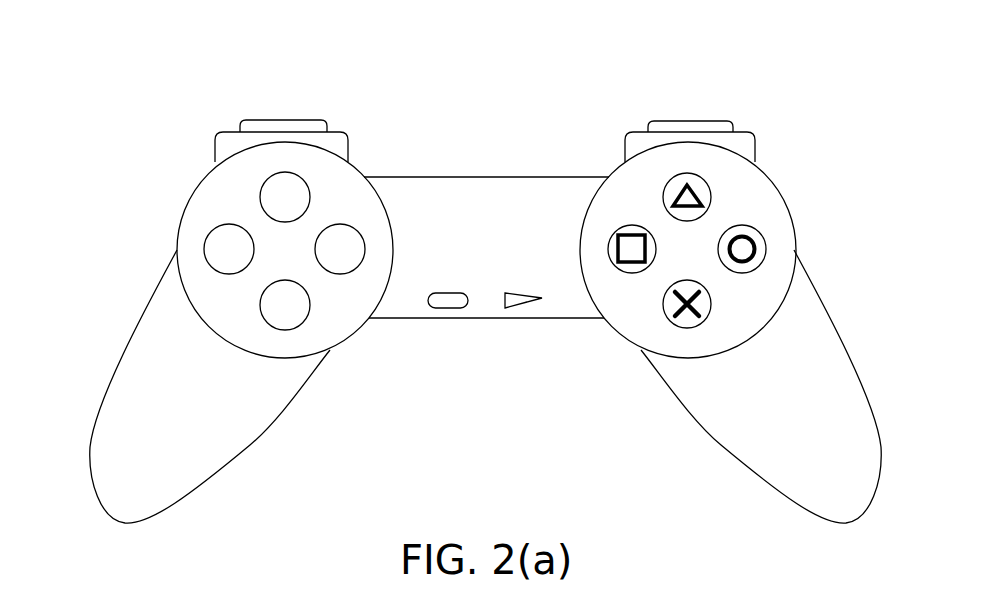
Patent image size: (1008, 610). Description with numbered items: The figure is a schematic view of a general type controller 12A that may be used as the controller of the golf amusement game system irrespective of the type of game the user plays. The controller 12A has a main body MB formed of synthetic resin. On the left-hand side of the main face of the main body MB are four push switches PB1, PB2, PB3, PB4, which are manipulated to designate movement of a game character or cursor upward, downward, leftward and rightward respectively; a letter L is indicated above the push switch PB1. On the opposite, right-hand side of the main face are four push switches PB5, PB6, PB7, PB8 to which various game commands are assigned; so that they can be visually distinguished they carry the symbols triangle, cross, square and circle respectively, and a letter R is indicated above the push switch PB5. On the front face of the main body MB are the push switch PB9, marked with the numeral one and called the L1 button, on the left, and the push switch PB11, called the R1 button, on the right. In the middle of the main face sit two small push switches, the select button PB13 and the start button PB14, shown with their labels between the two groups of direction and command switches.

The general type controller 12A is at (130, 110).
The main body MB is at (495, 197).
The push switch PB1 is at (288, 198).
The push switch PB2 is at (285, 312).
The push switch PB3 is at (228, 249).
The push switch PB4 is at (340, 249).
The push switch PB5 is at (707, 187).
The push switch PB6 is at (687, 322).
The push switch PB7 is at (632, 262).
The push switch PB8 is at (763, 252).
The push switch PB9 is at (285, 123).
The push switch PB11 is at (690, 125).
The push switch PB13 is at (447, 303).
The push switch PB14 is at (513, 303).